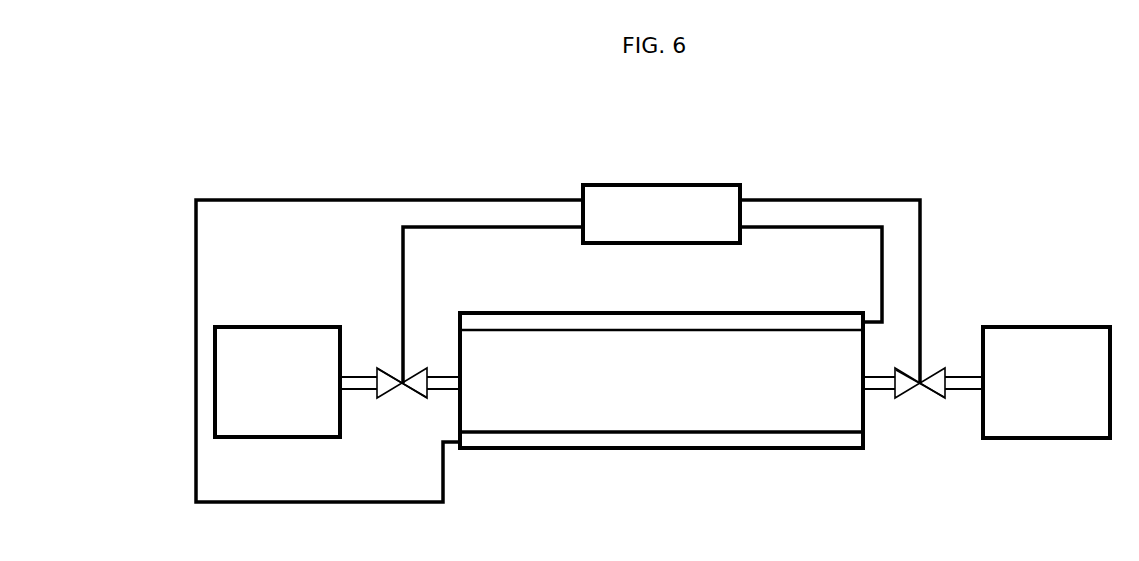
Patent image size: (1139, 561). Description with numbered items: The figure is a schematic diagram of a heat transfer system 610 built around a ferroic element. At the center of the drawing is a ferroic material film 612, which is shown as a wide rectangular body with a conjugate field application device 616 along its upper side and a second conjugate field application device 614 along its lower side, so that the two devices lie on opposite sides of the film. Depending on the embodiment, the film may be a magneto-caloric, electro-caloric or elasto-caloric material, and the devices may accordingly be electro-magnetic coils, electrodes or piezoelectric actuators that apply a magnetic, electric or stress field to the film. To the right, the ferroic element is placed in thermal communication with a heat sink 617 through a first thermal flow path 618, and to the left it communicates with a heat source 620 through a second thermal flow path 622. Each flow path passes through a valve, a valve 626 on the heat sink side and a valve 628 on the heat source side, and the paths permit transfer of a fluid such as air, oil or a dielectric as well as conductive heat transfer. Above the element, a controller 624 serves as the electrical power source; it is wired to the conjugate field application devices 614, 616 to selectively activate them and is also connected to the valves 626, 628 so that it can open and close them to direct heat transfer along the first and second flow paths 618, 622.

The heat transfer system 610 is at (932, 157).
The ferroic material film 612 is at (668, 382).
The conjugate field application device 614 is at (757, 442).
The conjugate field application device 616 is at (588, 313).
The heat sink 617 is at (1046, 382).
The first thermal flow path 618 is at (960, 373).
The heat source 620 is at (277, 382).
The second thermal flow path 622 is at (362, 377).
The controller 624 is at (661, 214).
The valve 626 is at (925, 386).
The valve 628 is at (417, 390).